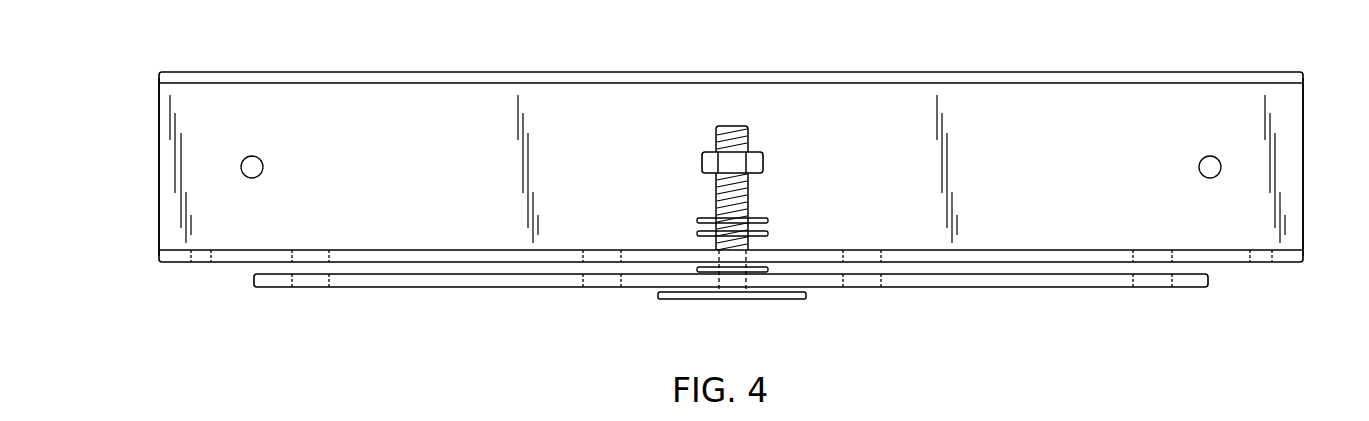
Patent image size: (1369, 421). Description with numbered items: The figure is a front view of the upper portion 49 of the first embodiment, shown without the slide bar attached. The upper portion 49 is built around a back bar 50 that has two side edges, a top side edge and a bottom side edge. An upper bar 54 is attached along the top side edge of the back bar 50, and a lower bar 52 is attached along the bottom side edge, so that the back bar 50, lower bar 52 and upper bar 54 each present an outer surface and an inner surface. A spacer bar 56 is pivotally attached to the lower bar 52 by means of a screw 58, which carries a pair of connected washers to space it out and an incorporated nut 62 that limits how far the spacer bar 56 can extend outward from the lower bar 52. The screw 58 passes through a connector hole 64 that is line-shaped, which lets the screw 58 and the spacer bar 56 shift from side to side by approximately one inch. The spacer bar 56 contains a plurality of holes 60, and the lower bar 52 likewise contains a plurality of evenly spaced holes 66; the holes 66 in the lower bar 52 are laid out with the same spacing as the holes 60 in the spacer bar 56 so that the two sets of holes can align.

The upper portion 49 is at (180, 72).
The back bar 50 is at (1305, 113).
The lower bar 52 is at (176, 262).
The upper bar 54 is at (549, 83).
The spacer bar 56 is at (920, 287).
The screw 58 is at (748, 128).
The holes 60 is at (330, 287).
The nut 62 is at (703, 157).
The connector hole 64 is at (700, 255).
The holes 66 is at (331, 250).